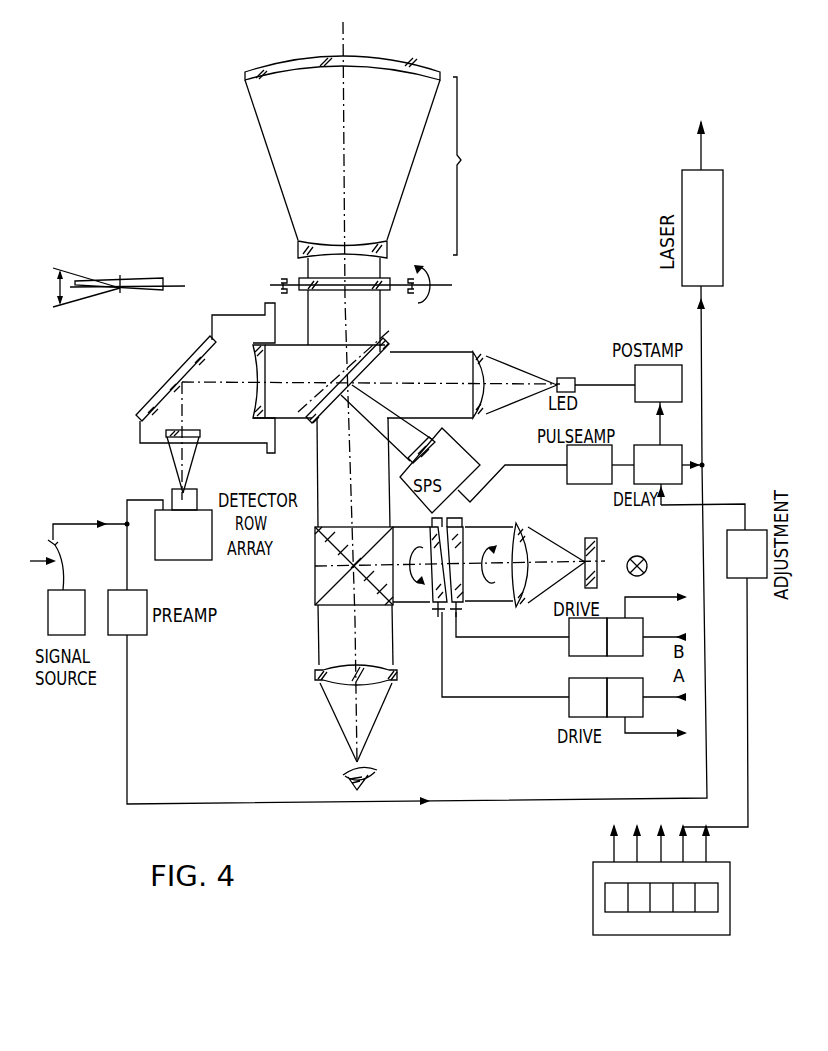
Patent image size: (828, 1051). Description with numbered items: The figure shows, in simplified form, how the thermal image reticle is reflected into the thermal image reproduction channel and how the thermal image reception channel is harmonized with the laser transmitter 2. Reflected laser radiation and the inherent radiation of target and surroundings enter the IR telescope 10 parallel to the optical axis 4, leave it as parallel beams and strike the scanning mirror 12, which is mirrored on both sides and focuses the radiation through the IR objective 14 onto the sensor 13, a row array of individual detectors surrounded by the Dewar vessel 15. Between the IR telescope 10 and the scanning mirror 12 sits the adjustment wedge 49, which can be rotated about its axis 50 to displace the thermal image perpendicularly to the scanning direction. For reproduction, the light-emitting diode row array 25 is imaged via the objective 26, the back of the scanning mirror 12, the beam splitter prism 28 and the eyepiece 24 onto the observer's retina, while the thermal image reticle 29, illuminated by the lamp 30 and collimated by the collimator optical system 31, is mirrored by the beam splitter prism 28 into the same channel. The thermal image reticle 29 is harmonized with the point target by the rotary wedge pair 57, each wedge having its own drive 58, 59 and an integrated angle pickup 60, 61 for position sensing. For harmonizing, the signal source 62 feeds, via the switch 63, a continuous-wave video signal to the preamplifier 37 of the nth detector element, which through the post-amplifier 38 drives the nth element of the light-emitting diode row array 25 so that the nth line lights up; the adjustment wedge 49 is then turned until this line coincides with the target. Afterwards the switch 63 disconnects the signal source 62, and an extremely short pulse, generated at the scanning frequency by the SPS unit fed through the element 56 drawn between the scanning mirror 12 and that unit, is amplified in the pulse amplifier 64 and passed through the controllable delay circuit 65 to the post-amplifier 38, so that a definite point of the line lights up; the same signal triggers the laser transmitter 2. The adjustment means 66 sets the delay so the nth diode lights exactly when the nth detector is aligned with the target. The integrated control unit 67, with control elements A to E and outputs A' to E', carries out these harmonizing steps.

The laser transmitter 2 is at (702, 203).
The optical axis 4 is at (343, 22).
The IR telescope 10 is at (366, 157).
The scanning mirror 12 is at (386, 348).
The sensor 13 is at (183, 493).
The IR objective 14 is at (145, 432).
The Dewar vessel 15 is at (183, 535).
The eyepiece 24 is at (318, 670).
The light-emitting diode row array 25 is at (565, 378).
The objective 26 is at (476, 350).
The beam splitter prism 28 is at (318, 572).
The thermal image reticle 29 is at (598, 533).
The lamp 30 is at (641, 557).
The collimator optical system 31 is at (530, 542).
The preamplifier 37 is at (135, 567).
The post-amplifier 38 is at (658, 405).
The adjustment wedge 49 is at (302, 280).
The axis 50 is at (276, 286).
The lens 56 is at (428, 444).
The rotary wedge pair 57 is at (445, 612).
The drive 58 is at (531, 634).
The drive 59 is at (524, 664).
The angle pickup 60 is at (647, 624).
The angle pickup 61 is at (647, 707).
The signal source 62 is at (66, 612).
The switch 63 is at (72, 544).
The pulse amplifier 64 is at (600, 464).
The controllable delay circuit 65 is at (689, 487).
The adjustment means 66 is at (725, 678).
The control unit 67 is at (600, 872).